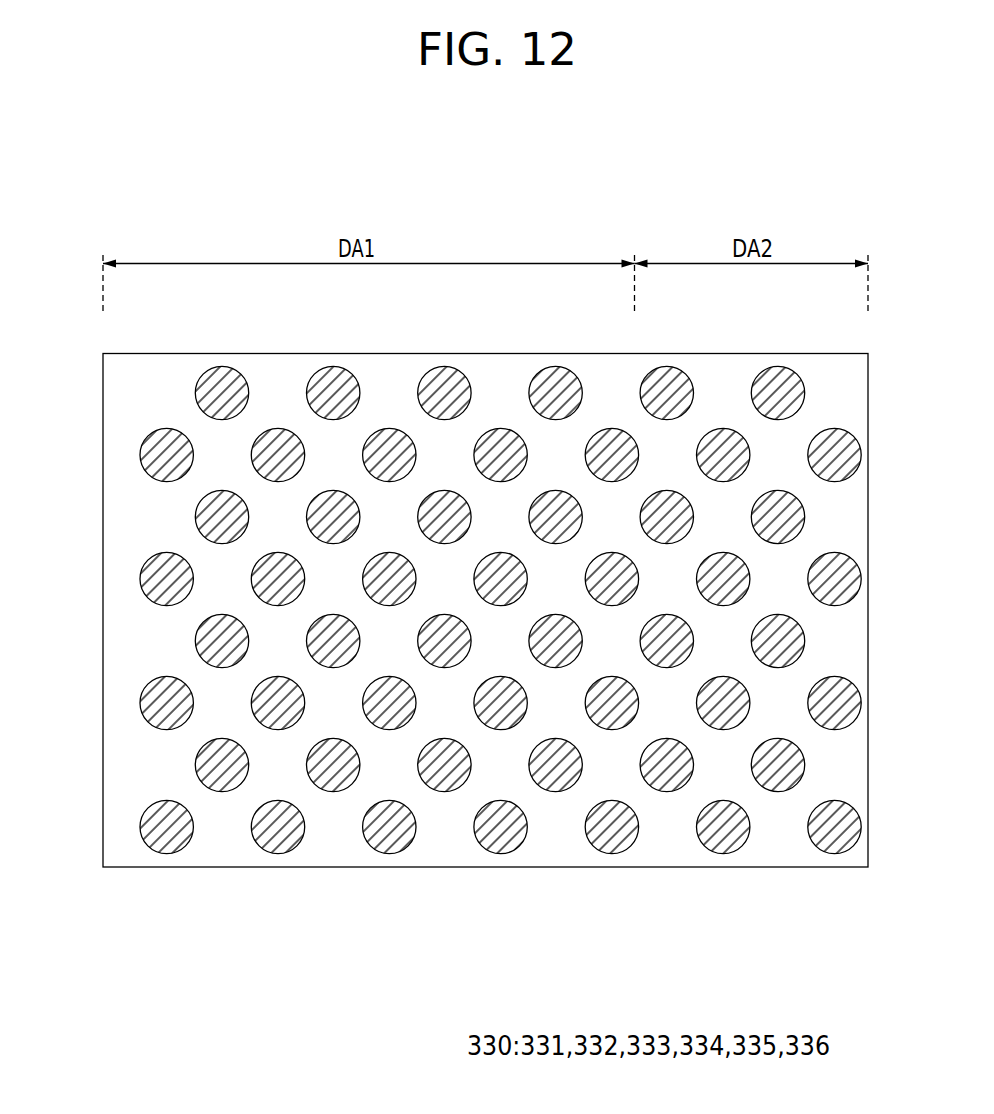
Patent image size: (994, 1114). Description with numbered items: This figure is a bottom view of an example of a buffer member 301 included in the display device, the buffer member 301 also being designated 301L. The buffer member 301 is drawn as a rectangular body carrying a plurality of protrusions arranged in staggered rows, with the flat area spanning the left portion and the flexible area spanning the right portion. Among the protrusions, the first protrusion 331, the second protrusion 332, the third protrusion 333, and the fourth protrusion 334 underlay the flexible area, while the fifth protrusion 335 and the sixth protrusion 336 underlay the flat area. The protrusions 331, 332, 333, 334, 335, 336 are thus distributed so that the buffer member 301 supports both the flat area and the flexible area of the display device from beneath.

The buffer member 301 is at (103, 432).
The buffer member 301L is at (889, 238).
The first protrusion 331 is at (665, 782).
The second protrusion 332 is at (720, 847).
The third protrusion 333 is at (773, 782).
The fourth protrusion 334 is at (830, 850).
The fifth protrusion 335 is at (552, 790).
The sixth protrusion 336 is at (608, 850).